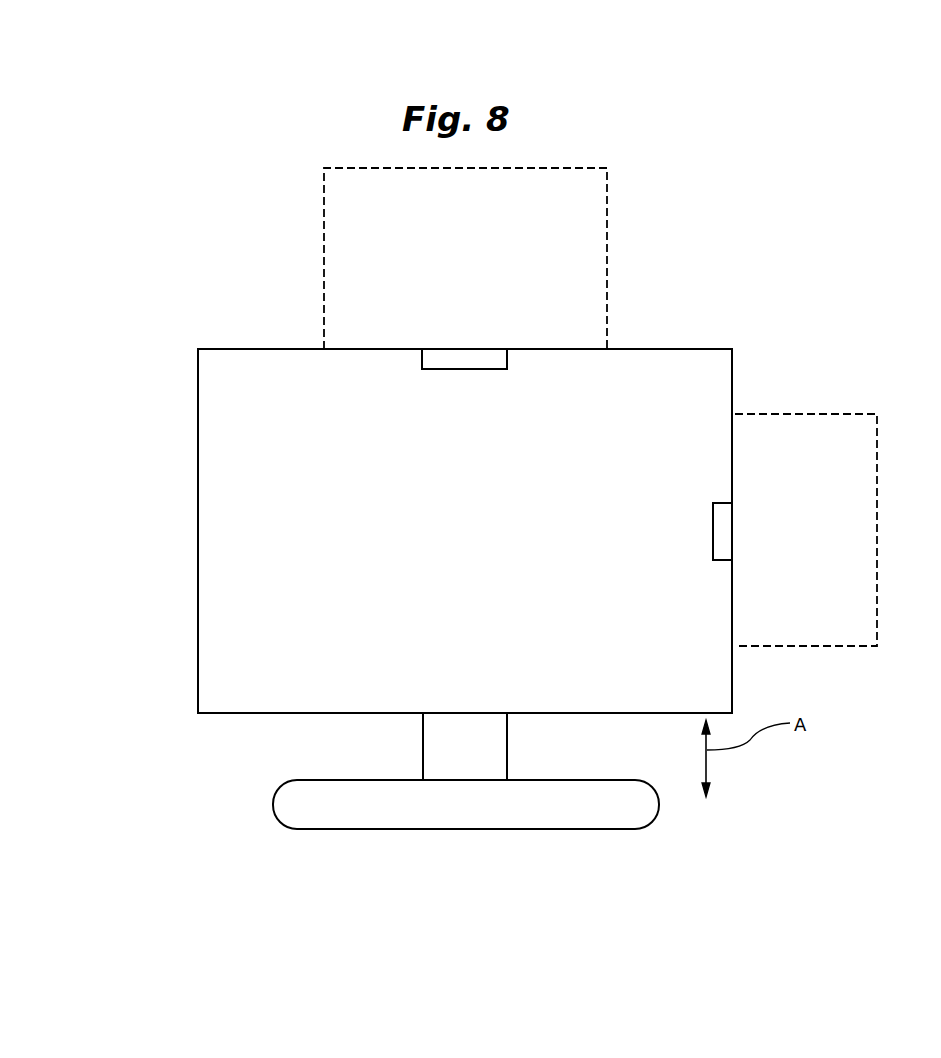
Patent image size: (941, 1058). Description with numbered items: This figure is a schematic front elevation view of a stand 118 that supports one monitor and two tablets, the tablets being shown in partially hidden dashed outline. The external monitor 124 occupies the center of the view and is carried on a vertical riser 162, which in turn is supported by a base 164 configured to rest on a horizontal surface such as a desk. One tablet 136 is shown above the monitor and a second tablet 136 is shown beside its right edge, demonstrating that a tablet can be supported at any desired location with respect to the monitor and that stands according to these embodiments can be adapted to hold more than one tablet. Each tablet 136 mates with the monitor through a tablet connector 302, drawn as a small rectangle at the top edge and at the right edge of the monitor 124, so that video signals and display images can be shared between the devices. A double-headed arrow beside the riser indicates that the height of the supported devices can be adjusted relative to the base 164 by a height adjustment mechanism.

The stand 118 is at (765, 313).
The external monitor 124 is at (351, 537).
The tablet connector 302 is at (426, 371).
The tablet 136 is at (552, 245).
The vertical riser 162 is at (423, 750).
The base 164 is at (316, 813).